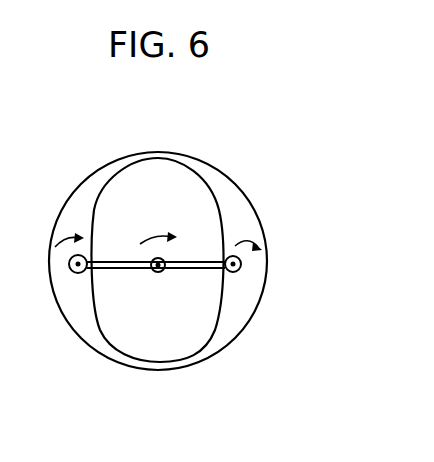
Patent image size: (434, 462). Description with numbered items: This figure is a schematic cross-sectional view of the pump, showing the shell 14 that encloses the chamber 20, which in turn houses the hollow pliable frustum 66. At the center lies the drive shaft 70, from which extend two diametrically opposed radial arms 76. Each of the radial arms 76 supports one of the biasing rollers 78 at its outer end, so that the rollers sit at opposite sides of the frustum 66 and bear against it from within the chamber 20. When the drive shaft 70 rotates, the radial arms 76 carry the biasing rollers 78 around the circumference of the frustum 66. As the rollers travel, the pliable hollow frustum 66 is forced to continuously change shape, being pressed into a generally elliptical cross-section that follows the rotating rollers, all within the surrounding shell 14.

The shell 14 is at (88, 180).
The chamber 20 is at (227, 325).
The hollow pliable frustum 66 is at (110, 322).
The drive shaft 70 is at (157, 273).
The radial arms 76 is at (115, 258).
The biasing rollers 78 is at (68, 266).